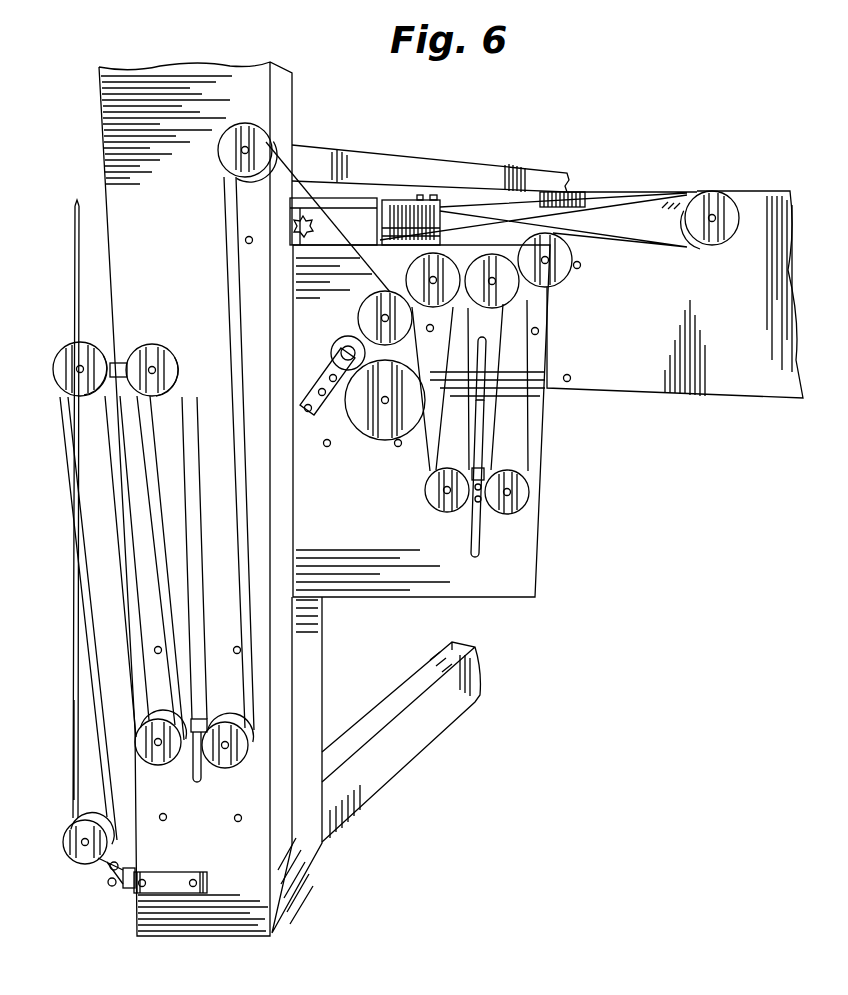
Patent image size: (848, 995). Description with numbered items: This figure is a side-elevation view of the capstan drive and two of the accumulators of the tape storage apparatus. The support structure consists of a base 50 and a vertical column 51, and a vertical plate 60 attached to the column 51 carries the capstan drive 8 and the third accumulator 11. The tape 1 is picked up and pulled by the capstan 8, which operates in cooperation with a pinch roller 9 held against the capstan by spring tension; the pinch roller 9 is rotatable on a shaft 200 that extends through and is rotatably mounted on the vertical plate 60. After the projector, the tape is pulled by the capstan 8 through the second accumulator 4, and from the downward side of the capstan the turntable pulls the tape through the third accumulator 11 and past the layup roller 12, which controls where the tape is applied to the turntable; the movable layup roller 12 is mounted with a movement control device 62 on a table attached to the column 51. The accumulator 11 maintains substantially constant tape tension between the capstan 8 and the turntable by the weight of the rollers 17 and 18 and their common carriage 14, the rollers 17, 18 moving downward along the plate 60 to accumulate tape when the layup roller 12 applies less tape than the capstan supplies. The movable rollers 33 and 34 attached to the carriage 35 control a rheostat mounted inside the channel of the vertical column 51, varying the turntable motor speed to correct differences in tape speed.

The vertical column 51 is at (105, 112).
The tape 1 is at (228, 247).
The movement control device 62 is at (342, 220).
The layup roller 12 is at (398, 217).
The pinch roller 9 is at (350, 338).
The shaft 200 is at (310, 423).
The capstan drive 8 is at (383, 441).
The vertical plate 60 is at (548, 406).
The carriage 14 is at (487, 473).
The roller 17 is at (430, 493).
The roller 18 is at (530, 492).
The third accumulator 11 is at (486, 587).
The movable roller 33 is at (167, 763).
The carriage 35 is at (186, 752).
The movable roller 34 is at (230, 763).
The second accumulator 4 is at (209, 841).
The base 50 is at (412, 752).